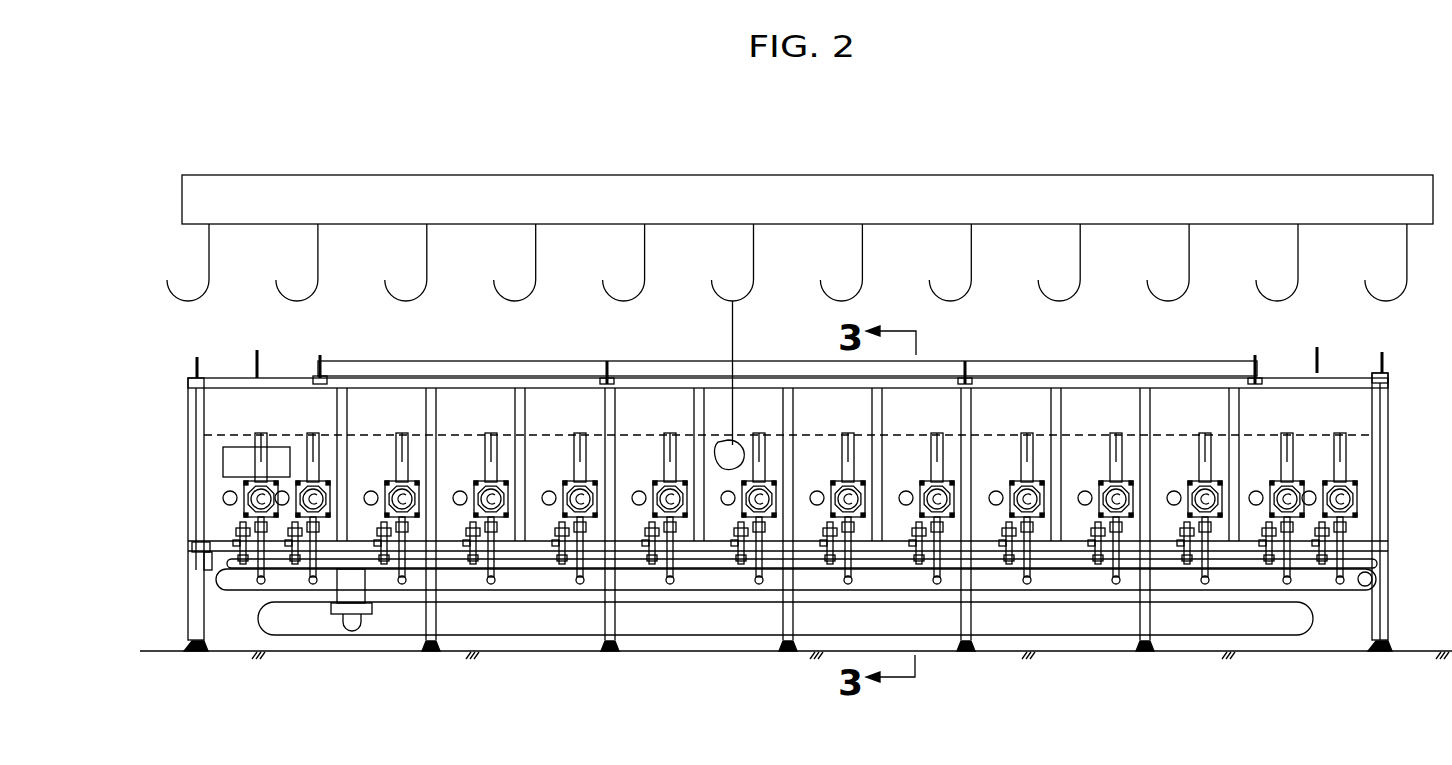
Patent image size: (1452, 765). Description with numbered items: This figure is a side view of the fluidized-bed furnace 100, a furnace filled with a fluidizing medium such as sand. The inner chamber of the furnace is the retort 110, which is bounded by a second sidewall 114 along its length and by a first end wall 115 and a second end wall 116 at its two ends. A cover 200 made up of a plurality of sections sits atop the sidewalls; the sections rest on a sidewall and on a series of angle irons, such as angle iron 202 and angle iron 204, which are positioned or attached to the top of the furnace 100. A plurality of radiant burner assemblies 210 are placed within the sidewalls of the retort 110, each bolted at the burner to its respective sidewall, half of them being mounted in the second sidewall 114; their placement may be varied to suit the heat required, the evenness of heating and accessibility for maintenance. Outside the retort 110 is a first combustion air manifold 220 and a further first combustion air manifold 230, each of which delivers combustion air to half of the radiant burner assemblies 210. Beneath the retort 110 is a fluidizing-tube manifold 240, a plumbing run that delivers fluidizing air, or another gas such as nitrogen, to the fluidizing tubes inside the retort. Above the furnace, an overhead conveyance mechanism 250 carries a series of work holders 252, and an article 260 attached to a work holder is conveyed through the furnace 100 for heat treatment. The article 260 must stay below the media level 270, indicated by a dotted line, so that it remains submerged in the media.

The fluidized-bed furnace 100 is at (352, 685).
The retort 110 is at (1393, 408).
The second sidewall 114 is at (235, 405).
The first end wall 115 is at (187, 513).
The second end wall 116 is at (1393, 492).
The cover 200 is at (702, 365).
The angle iron 202 is at (323, 380).
The angle iron 204 is at (605, 382).
The radiant burner assembly 210 is at (222, 520).
The first combustion air manifold 220 is at (228, 562).
The first combustion air manifold 230 is at (1362, 586).
The fluidizing-tube manifold 240 is at (1185, 625).
The overhead conveyance mechanism 250 is at (1245, 175).
The work holder 252 is at (754, 258).
The article 260 is at (736, 445).
The media level 270 is at (230, 437).